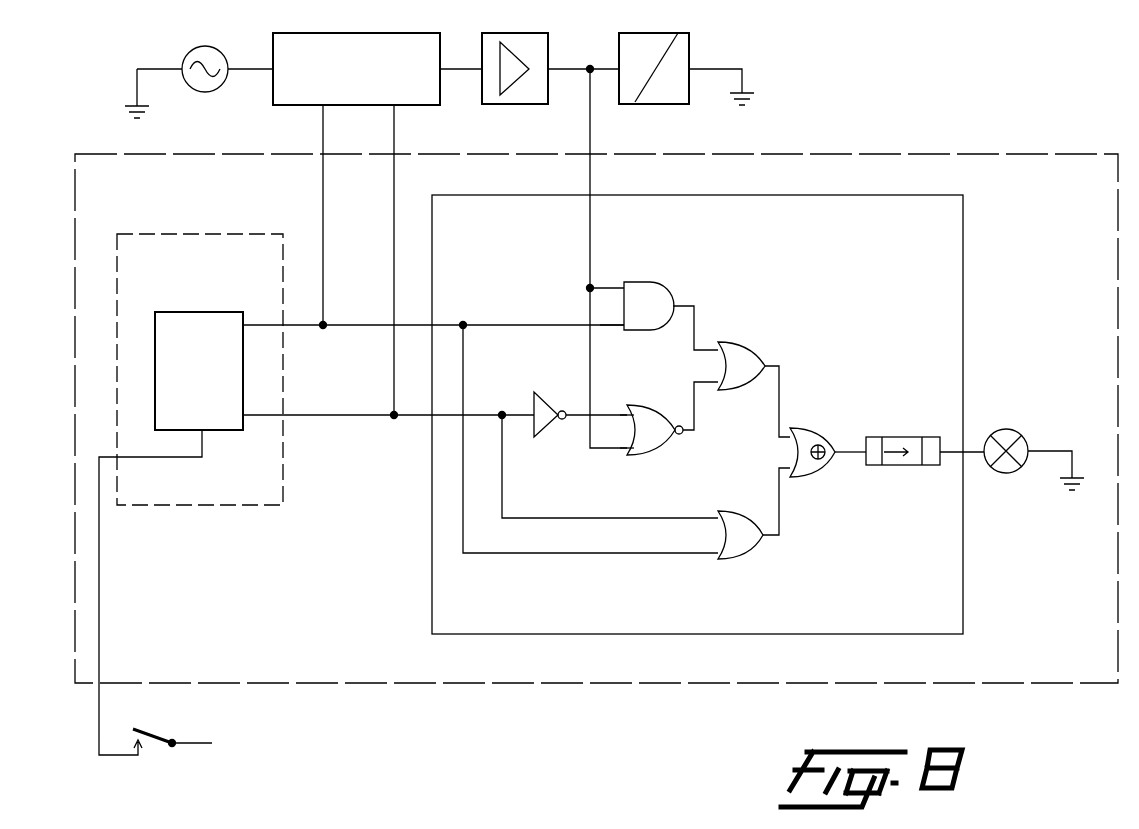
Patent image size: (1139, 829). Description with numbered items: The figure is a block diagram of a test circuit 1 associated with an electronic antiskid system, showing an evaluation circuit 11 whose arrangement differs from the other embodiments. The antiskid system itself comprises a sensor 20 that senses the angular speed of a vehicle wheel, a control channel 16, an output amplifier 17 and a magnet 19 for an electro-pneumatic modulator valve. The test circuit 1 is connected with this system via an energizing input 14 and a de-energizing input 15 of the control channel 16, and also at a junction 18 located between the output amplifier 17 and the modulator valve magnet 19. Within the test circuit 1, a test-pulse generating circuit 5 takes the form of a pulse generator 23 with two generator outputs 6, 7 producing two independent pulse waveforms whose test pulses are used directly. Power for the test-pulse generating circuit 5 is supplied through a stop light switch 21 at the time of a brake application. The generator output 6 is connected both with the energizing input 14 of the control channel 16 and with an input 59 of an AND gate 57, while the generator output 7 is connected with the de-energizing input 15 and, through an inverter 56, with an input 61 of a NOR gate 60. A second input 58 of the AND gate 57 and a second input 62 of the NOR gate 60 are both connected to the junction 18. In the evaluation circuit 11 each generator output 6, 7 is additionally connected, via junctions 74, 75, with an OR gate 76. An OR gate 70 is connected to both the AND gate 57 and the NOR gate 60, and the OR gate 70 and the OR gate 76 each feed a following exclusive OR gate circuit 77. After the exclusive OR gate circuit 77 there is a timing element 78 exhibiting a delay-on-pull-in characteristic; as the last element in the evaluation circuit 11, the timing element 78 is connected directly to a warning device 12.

The test circuit 1 is at (418, 683).
The test-pulse generating circuit 5 is at (198, 505).
The generator output 6 is at (245, 325).
The generator output 7 is at (246, 417).
The evaluation circuit 11 is at (965, 276).
The warning device 12 is at (1008, 433).
The energizing input 14 is at (323, 108).
The de-energizing input 15 is at (394, 108).
The control channel 16 is at (347, 33).
The output amplifier 17 is at (508, 33).
The junction 18 is at (590, 66).
The magnet 19 is at (655, 33).
The sensor 20 is at (186, 57).
The stop light switch 21 is at (157, 739).
The pulse generator 23 is at (205, 312).
The inverter 56 is at (540, 426).
The AND gate 57 is at (659, 287).
The second input of AND gate 58 is at (621, 287).
The input of AND gate 59 is at (622, 328).
The NOR gate 60 is at (663, 443).
The input of NOR gate 61 is at (629, 413).
The second input of NOR gate 62 is at (631, 450).
The OR gate 70 is at (749, 345).
The junction 74 is at (463, 322).
The junction 75 is at (502, 412).
The OR gate 76 is at (755, 552).
The exclusive OR gate circuit 77 is at (824, 433).
The timing element 78 is at (910, 437).